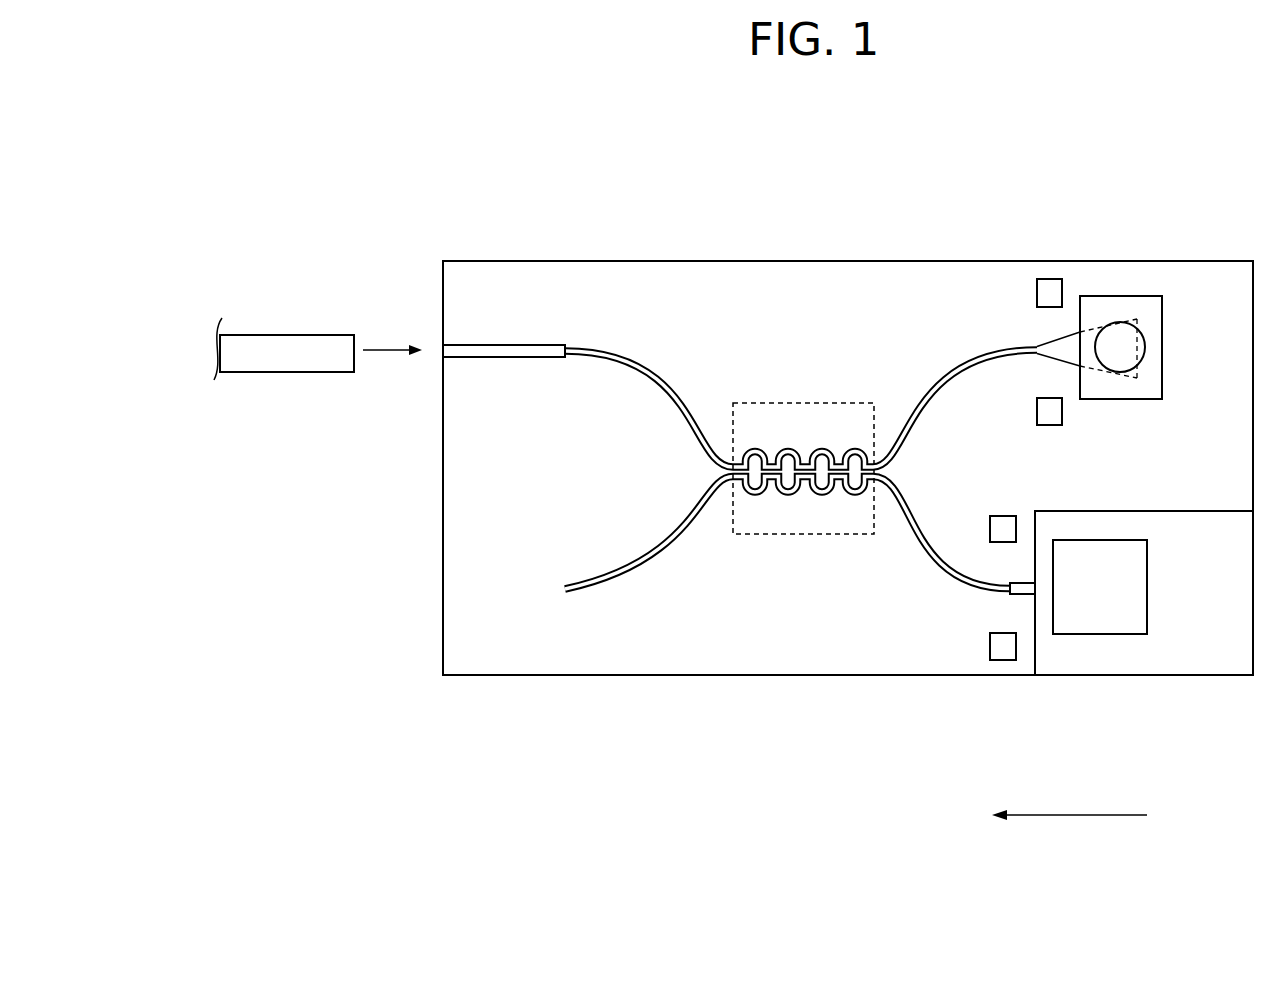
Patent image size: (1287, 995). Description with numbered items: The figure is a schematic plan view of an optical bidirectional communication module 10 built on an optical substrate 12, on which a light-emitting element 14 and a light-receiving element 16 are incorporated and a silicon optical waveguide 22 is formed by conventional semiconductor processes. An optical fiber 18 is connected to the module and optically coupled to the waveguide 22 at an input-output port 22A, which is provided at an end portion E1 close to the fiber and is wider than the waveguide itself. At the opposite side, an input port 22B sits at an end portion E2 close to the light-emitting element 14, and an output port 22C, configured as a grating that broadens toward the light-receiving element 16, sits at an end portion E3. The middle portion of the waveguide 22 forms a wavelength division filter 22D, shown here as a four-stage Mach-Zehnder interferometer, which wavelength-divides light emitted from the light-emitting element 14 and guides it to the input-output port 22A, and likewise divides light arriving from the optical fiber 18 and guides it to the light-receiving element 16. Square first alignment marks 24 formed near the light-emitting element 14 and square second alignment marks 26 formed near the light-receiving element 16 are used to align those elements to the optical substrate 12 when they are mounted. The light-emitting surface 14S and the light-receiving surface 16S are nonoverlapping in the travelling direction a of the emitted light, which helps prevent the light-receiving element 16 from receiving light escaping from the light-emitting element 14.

The optical bidirectional communication module 10 is at (937, 188).
The optical substrate 12 is at (703, 660).
The light-emitting element 14 is at (1108, 623).
The light-emitting surface 14S is at (1055, 634).
The light-receiving element 16 is at (1153, 315).
The light-receiving surface 16S is at (1082, 296).
The optical fiber 18 is at (302, 335).
The optical waveguide 22 is at (666, 362).
The input-output port 22A is at (493, 357).
The input port 22B is at (1015, 594).
The output port 22C is at (1060, 355).
The wavelength division filter 22D is at (814, 402).
The first alignment marks 24 is at (1004, 524).
The second alignment marks 26 is at (1037, 288).
The end portion E1 is at (567, 326).
The end portion E2 is at (1010, 565).
The end portion E3 is at (1027, 330).
The travelling direction a is at (1071, 817).